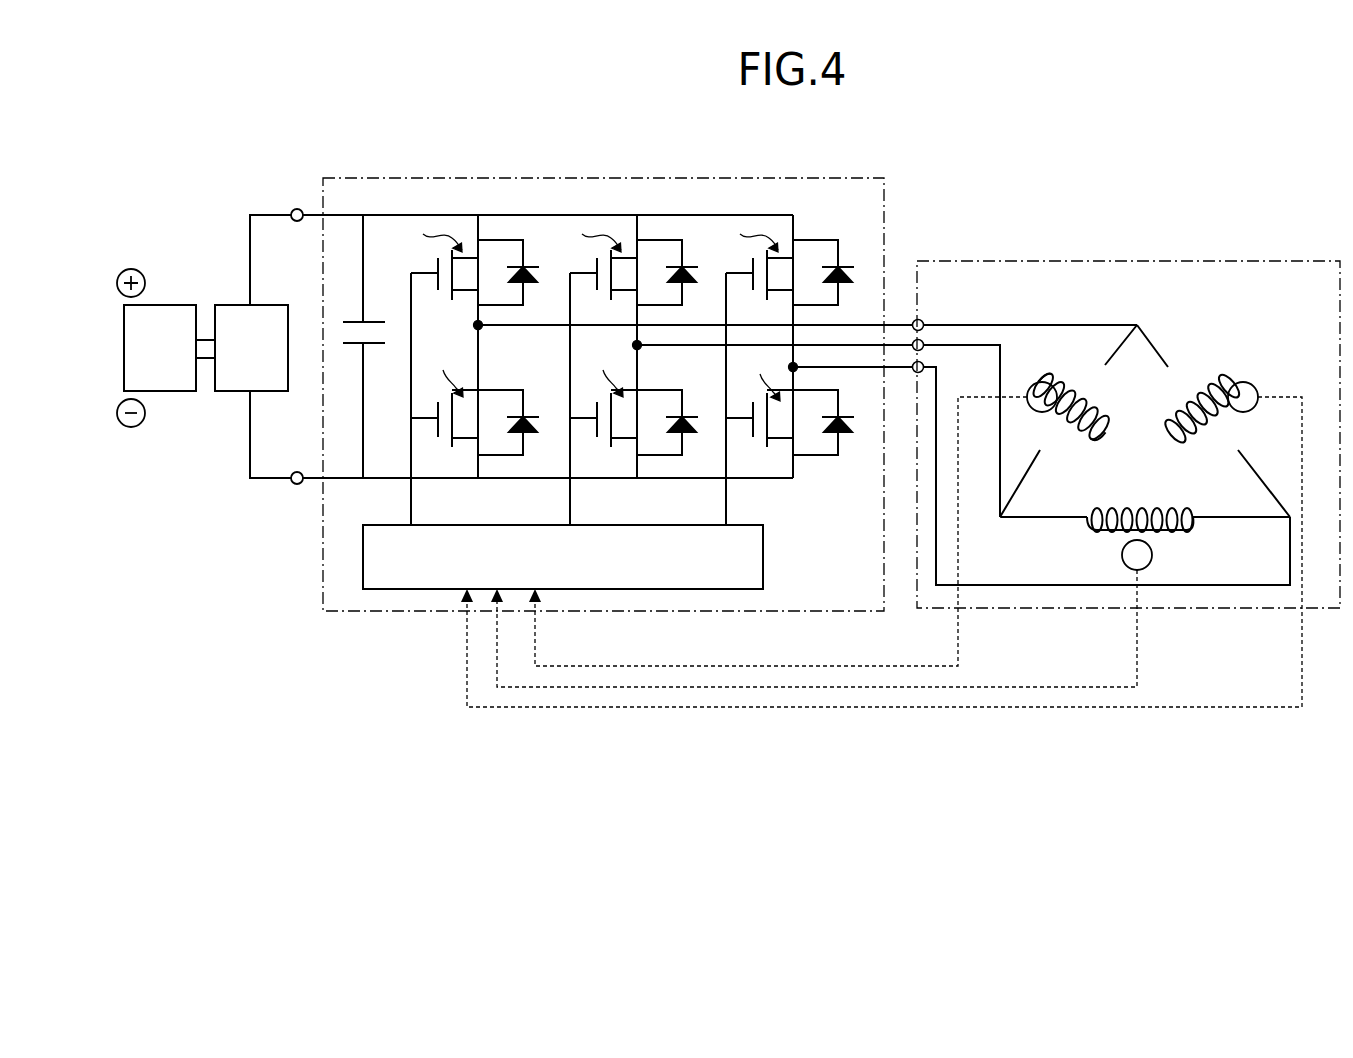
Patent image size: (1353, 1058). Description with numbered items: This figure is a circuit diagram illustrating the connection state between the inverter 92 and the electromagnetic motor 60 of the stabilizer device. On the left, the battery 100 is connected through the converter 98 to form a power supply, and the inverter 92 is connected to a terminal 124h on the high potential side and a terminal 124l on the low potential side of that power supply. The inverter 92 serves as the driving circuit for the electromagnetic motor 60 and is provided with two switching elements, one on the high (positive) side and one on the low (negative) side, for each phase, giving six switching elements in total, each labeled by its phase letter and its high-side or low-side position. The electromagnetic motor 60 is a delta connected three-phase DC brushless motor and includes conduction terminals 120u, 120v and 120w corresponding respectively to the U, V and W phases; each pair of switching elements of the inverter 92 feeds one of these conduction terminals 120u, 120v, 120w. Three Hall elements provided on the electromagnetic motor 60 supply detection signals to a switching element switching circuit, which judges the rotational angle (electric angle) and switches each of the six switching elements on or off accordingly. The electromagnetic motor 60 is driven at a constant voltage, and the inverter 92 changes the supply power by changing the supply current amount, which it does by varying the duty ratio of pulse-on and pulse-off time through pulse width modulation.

The electromagnetic motor 60 is at (1246, 262).
The inverter 92 is at (820, 180).
The converter 98 is at (268, 303).
The battery 100 is at (174, 287).
The conduction terminal 120u is at (925, 320).
The conduction terminal 120v is at (924, 343).
The conduction terminal 120w is at (975, 366).
The terminal on the high potential side 124h is at (297, 209).
The terminal on the low potential side 124l is at (297, 484).